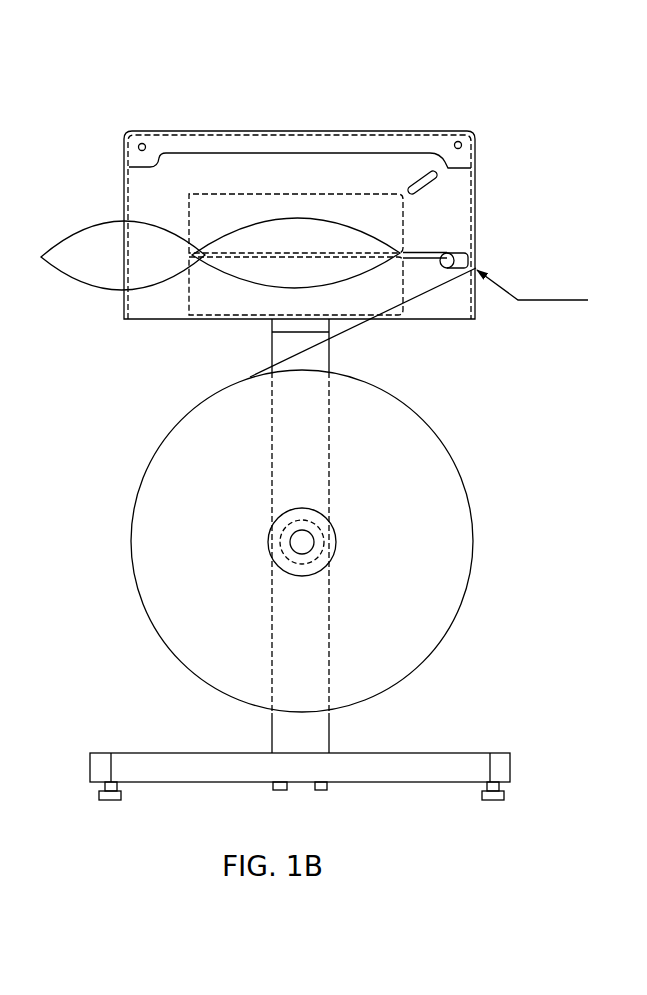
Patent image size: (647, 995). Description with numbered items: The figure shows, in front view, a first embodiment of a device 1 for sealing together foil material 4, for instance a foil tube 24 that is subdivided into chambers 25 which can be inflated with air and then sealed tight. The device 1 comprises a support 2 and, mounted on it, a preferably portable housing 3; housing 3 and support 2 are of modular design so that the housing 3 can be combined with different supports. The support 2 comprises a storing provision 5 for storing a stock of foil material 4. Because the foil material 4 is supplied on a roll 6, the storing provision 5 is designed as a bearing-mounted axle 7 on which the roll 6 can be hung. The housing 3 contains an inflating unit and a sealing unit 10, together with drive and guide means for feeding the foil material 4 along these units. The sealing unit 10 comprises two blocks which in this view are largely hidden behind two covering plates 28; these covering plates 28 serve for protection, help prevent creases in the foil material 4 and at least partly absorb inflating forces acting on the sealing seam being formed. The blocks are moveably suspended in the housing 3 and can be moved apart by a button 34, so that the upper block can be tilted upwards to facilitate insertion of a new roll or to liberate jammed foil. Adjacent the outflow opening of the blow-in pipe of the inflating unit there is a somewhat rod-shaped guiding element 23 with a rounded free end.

The device 1 is at (548, 497).
The support 2 is at (415, 763).
The housing 3 is at (232, 173).
The foil material 4 is at (357, 536).
The foil tube 24 is at (347, 328).
The storing provision 5 is at (128, 647).
The roll 6 is at (440, 598).
The bearing-mounted axle 7 is at (302, 542).
The sealing unit 10 is at (368, 187).
The guiding element 23 is at (440, 245).
The chambers 25 is at (85, 263).
The covering plates 28 is at (368, 225).
The button 34 is at (447, 168).